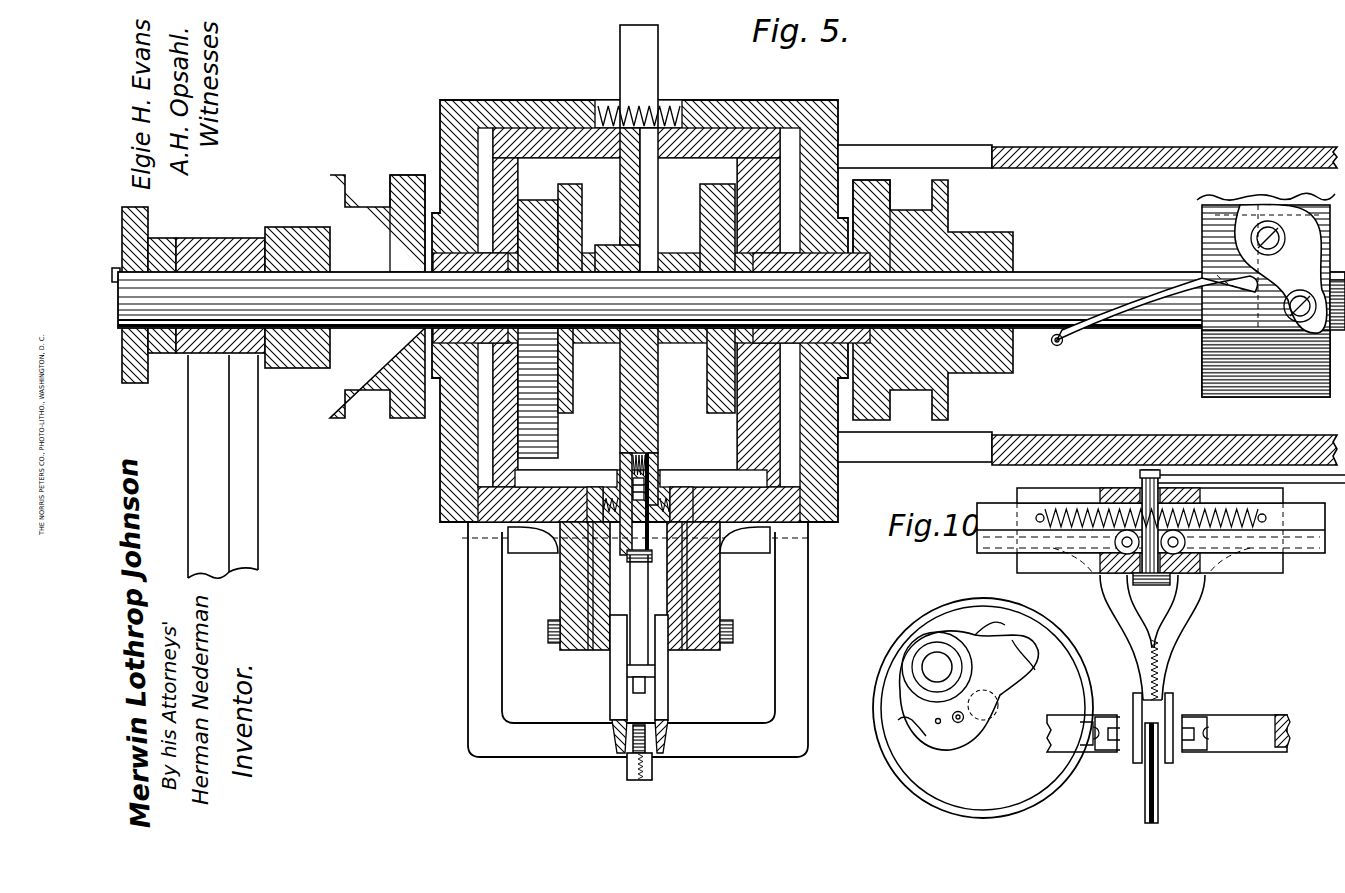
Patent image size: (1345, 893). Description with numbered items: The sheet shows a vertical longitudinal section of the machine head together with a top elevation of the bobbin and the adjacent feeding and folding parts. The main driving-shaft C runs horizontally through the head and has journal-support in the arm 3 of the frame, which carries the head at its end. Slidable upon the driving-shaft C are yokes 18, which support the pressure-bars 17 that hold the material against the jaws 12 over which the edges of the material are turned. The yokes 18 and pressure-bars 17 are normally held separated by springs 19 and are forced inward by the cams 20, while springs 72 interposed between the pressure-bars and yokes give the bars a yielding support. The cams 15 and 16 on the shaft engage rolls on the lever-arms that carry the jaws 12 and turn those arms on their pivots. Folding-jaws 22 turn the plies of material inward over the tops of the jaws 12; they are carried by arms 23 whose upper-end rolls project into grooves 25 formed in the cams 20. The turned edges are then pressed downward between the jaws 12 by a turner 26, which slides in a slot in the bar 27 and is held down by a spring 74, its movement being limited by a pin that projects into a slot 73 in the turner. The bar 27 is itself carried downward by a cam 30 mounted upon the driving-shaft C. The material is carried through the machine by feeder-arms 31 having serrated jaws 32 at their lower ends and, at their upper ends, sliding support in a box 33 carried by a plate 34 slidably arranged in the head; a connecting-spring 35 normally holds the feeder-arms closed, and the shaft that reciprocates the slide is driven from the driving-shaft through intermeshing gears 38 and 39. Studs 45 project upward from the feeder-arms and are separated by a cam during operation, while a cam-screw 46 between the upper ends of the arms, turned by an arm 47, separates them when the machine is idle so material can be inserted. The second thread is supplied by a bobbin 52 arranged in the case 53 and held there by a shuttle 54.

In FIG. 5, the main driving-shaft C is at (667, 292).
In FIG. 5, the arm 3 is at (1118, 149).
In FIG. 5, the jaws 12 is at (656, 740).
In FIG. 10, the jaws 12 is at (1160, 788).
In FIG. 5, the cam 15 is at (582, 198).
In FIG. 5, the cam 16 is at (705, 197).
In FIG. 5, the pressure-bars 17 is at (668, 686).
In FIG. 10, the pressure-bars 17 is at (1173, 706).
In FIG. 5, the yokes 18 is at (825, 512).
In FIG. 5, the springs 19 is at (661, 500).
In FIG. 5, the cams 20 is at (872, 180).
In FIG. 10, the folding-jaws 22 is at (1192, 752).
In FIG. 10, the arms 23 is at (1278, 716).
In FIG. 5, the grooves 25 is at (912, 208).
In FIG. 5, the turner 26 is at (636, 596).
In FIG. 5, the bar 27 is at (658, 452).
In FIG. 5, the cam 30 is at (605, 250).
In FIG. 5, the feeder-arms 31 is at (780, 672).
In FIG. 10, the feeder-arms 31 is at (1330, 550).
In FIG. 5, the serrated jaws 32 is at (652, 778).
In FIG. 10, the serrated jaws 32 is at (1167, 643).
In FIG. 5, the box 33 is at (752, 548).
In FIG. 10, the box 33 is at (1254, 568).
In FIG. 5, the plate 34 is at (713, 478).
In FIG. 10, the connecting-spring 35 is at (1082, 508).
In FIG. 5, the gear 38 is at (558, 428).
In FIG. 5, the gear 39 is at (536, 207).
In FIG. 10, the studs 45 is at (1186, 541).
In FIG. 10, the cam-screw 46 is at (1141, 473).
In FIG. 10, the arm 47 is at (1305, 480).
In FIG. 10, the bobbin 52 is at (918, 642).
In FIG. 10, the case 53 is at (874, 691).
In FIG. 10, the shuttle 54 is at (980, 750).
In FIG. 5, the springs 72 is at (590, 601).
In FIG. 5, the slot 73 is at (618, 490).
In FIG. 5, the spring 74 is at (645, 452).